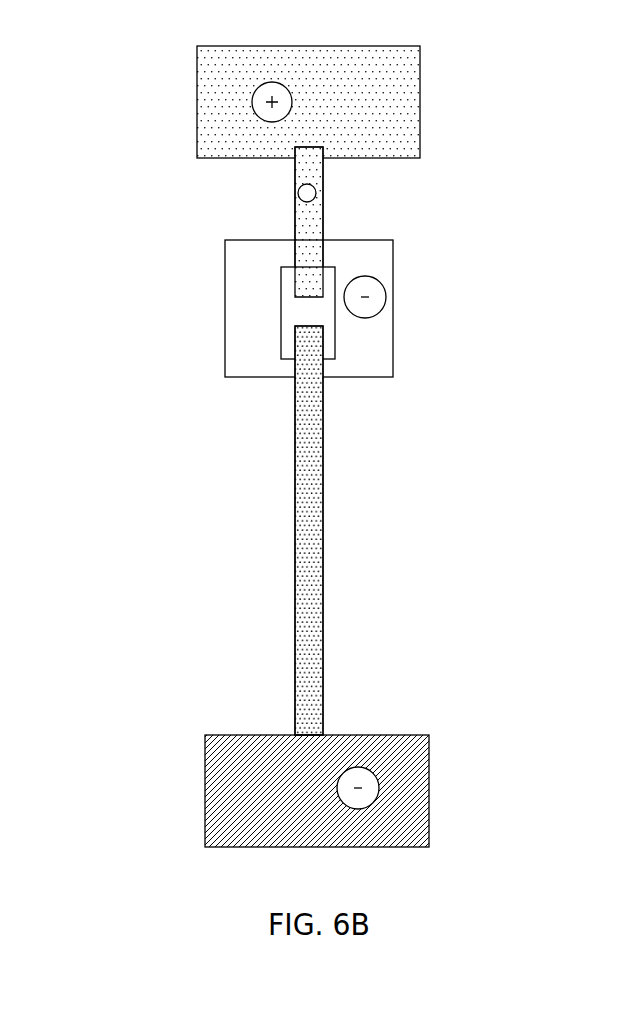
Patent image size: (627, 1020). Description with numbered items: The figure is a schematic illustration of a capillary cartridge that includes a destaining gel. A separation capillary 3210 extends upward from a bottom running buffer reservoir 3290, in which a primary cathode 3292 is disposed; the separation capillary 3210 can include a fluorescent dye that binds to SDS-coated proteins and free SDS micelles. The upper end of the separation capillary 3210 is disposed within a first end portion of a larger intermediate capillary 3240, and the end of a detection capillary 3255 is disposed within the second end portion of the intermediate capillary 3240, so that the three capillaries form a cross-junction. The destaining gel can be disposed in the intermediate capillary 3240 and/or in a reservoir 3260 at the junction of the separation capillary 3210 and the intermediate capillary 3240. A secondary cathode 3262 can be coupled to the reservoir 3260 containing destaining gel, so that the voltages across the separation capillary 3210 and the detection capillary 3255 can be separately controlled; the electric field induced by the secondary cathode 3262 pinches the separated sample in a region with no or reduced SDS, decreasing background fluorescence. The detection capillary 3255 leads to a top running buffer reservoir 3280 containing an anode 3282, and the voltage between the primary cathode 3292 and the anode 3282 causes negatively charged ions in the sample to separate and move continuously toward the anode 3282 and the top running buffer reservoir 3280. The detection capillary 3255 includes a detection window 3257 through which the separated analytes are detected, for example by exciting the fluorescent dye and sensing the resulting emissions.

The top running buffer reservoir 3280 is at (393, 102).
The anode 3282 is at (252, 102).
The detection capillary 3255 is at (295, 220).
The detection window 3257 is at (303, 193).
The reservoir containing destaining gel 3260 is at (252, 311).
The intermediate capillary 3240 is at (337, 332).
The secondary cathode 3262 is at (378, 297).
The separation capillary 3210 is at (318, 408).
The bottom running buffer reservoir 3290 is at (255, 767).
The primary cathode 3292 is at (360, 767).